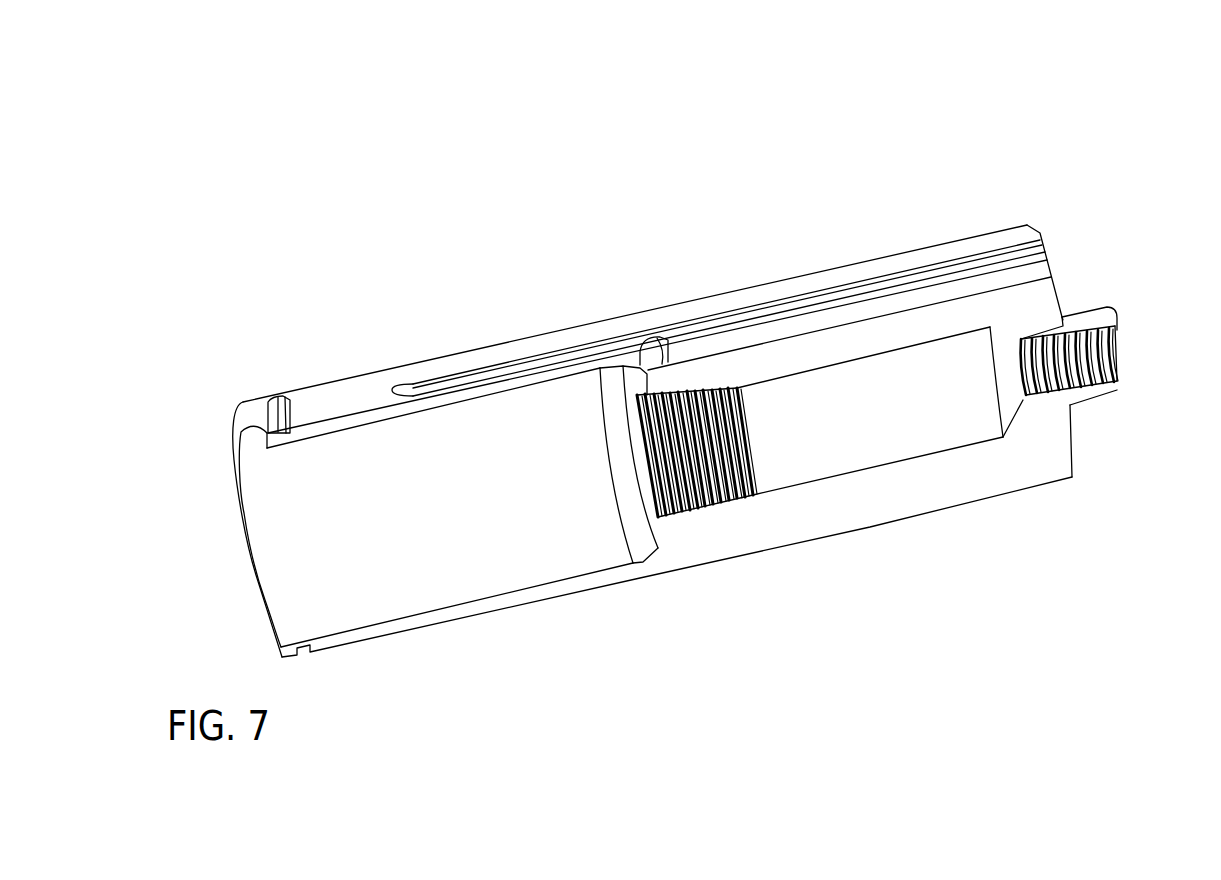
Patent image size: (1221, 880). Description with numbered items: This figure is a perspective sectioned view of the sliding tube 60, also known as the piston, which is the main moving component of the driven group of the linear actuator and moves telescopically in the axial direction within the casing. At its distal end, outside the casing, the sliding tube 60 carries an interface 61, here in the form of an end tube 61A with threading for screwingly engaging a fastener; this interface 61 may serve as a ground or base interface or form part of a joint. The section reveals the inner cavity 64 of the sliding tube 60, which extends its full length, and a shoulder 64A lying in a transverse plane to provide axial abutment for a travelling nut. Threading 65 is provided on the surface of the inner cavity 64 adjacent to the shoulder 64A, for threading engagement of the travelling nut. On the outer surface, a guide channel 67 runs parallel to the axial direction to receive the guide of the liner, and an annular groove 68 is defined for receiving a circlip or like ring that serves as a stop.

The sliding tube 60 is at (846, 157).
The interface 61 is at (1080, 288).
The end tube 61A is at (1100, 406).
The inner cavity 64 is at (280, 518).
The shoulder 64A is at (648, 530).
The threading 65 is at (735, 465).
The guide channel 67 is at (900, 297).
The annular groove 68 is at (277, 403).